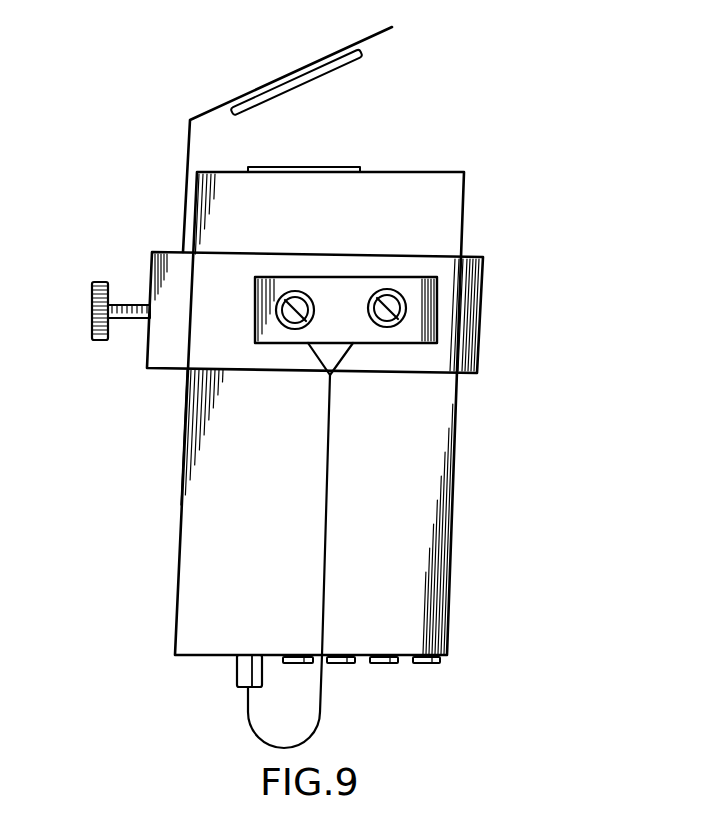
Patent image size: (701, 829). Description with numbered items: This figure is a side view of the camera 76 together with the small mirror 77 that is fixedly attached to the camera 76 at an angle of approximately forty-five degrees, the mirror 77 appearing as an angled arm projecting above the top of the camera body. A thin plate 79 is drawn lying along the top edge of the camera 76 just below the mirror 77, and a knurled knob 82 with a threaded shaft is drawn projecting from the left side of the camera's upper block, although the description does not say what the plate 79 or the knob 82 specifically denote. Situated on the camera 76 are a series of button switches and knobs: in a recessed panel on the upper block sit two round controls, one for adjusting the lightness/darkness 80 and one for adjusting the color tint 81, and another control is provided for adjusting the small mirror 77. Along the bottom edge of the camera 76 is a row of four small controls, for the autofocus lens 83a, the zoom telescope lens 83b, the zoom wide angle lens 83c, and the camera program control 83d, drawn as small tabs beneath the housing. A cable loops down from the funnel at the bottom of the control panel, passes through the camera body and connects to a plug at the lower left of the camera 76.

The camera 76 is at (157, 607).
The small mirror 77 is at (330, 68).
The top plate 79 is at (275, 167).
The lightness/darkness adjustment 80 is at (293, 290).
The color tint adjustment 81 is at (385, 288).
The thumb screw knob 82 is at (92, 303).
The autofocus lens control 83a is at (295, 663).
The zoom telescope lens control 83b is at (333, 664).
The zoom wide angle lens control 83c is at (375, 664).
The camera program control 83d is at (432, 664).